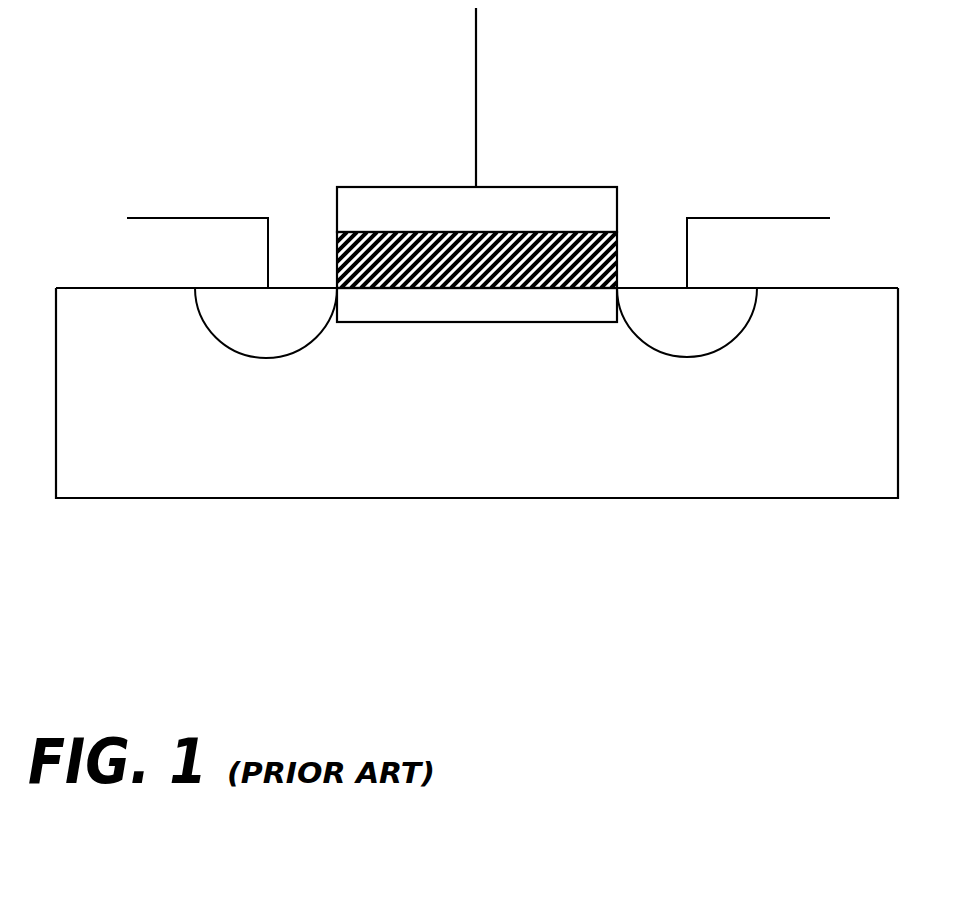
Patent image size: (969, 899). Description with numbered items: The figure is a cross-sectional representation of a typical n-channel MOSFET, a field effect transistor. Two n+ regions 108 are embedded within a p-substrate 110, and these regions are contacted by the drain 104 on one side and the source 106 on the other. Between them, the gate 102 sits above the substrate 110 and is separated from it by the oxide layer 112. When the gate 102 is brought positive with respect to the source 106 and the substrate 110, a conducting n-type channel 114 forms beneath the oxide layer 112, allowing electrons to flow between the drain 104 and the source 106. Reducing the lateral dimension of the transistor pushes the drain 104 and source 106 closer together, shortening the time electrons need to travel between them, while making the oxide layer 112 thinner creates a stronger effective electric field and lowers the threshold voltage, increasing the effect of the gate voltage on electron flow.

The gate 102 is at (477, 120).
The drain 104 is at (195, 223).
The source 106 is at (761, 221).
The n+ region 108 is at (476, 323).
The p-substrate 110 is at (477, 393).
The oxide layer 112 is at (633, 255).
The channel 114 is at (477, 305).